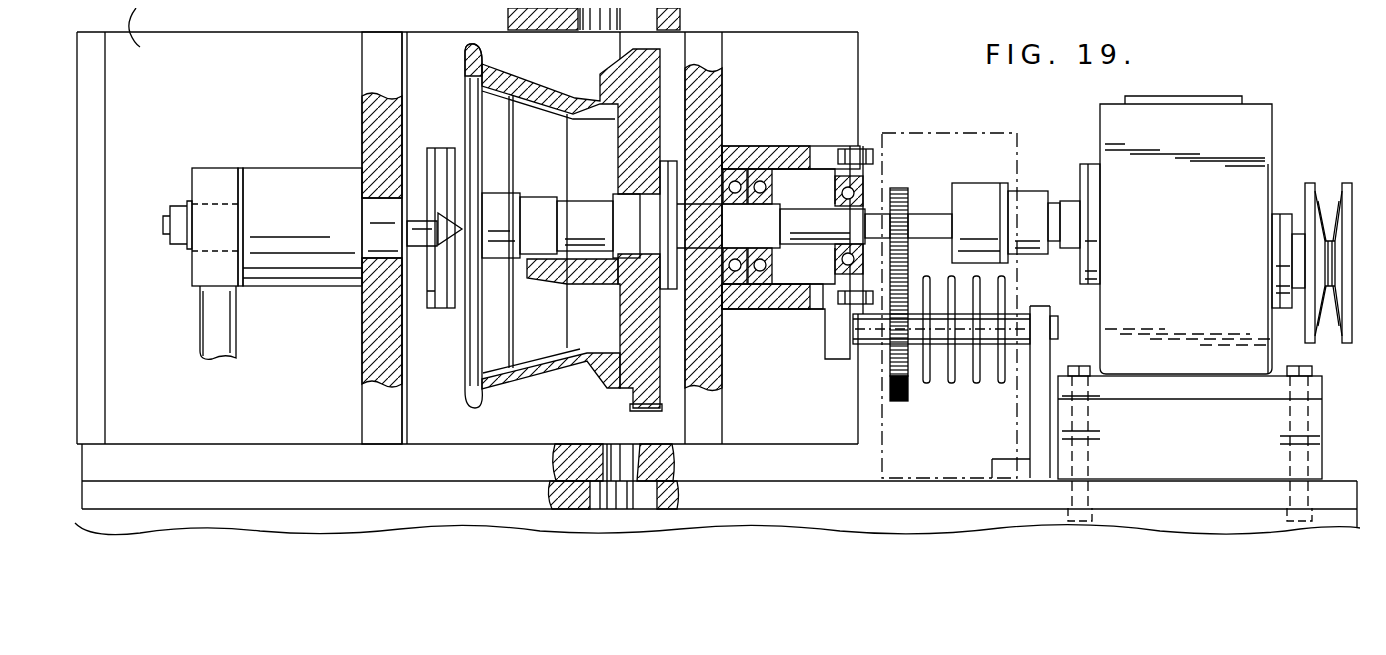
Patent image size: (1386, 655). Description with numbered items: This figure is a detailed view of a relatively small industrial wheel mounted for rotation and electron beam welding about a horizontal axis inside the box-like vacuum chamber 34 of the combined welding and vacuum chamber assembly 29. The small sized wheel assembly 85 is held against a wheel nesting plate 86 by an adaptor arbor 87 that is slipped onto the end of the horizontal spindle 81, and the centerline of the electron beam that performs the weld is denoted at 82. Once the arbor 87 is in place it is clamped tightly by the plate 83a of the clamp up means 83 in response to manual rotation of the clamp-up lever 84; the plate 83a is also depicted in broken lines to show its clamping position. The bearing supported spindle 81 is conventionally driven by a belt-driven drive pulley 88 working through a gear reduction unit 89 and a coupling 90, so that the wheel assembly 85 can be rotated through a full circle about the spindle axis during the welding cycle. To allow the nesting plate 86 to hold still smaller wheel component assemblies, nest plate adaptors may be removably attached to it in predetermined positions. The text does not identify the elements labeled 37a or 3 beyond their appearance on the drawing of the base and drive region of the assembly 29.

The vacuum chamber 34 is at (382, 59).
The small sized wheel assembly 85 is at (458, 51).
The centerline of the electron beam 82 is at (612, 35).
The wheel nesting plate 86 is at (654, 55).
The adaptor arbor 87 is at (492, 193).
The horizontal spindle 81 is at (807, 203).
The clamp up means 83 is at (346, 290).
The plate 83a is at (439, 299).
The clamp-up lever 84 is at (198, 321).
The combined welding and vacuum chamber assembly 29 is at (872, 100).
The coupling 90 is at (988, 183).
The fins 37a is at (994, 392).
The gear reduction unit 89 is at (1197, 237).
The belt-driven drive pulley 88 is at (1306, 185).
The base 3 is at (1340, 506).